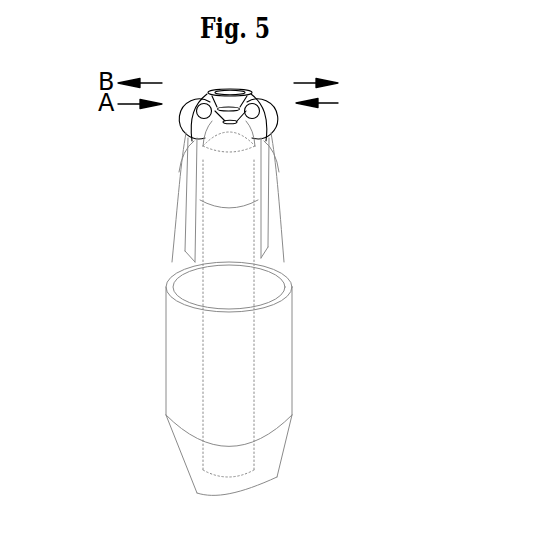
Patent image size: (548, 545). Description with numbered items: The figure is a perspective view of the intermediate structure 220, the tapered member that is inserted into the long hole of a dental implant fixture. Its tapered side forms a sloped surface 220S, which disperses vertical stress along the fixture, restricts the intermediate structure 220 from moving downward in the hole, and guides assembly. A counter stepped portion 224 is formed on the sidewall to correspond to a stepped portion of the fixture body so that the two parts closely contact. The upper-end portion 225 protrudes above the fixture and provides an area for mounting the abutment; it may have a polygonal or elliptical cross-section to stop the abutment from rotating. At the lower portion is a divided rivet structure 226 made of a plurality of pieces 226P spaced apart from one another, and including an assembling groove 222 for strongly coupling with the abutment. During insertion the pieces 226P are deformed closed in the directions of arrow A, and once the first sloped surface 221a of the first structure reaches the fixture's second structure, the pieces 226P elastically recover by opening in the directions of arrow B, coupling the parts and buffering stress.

The intermediate structure 220 is at (177, 351).
The sloped surface 220S is at (276, 154).
The first sloped surface 221a is at (272, 118).
The assembling groove 222 is at (222, 482).
The counter stepped portion 224 is at (287, 282).
The upper-end portion 225 is at (283, 448).
The divided rivet structure 226 is at (149, 151).
The pieces 226P is at (180, 206).